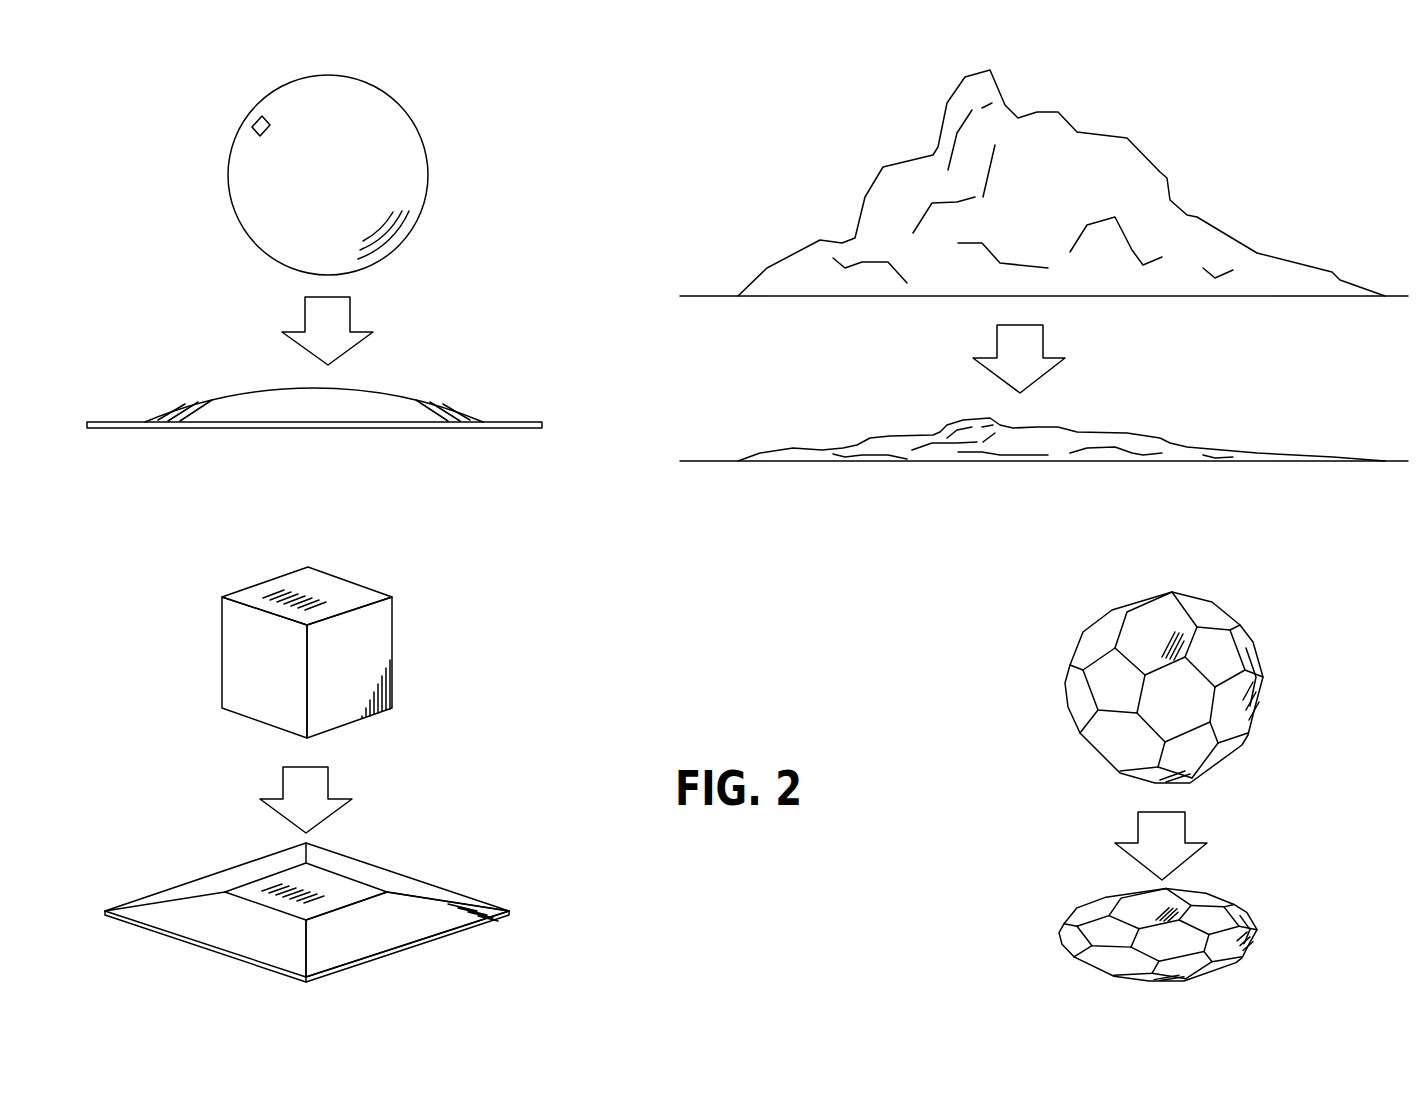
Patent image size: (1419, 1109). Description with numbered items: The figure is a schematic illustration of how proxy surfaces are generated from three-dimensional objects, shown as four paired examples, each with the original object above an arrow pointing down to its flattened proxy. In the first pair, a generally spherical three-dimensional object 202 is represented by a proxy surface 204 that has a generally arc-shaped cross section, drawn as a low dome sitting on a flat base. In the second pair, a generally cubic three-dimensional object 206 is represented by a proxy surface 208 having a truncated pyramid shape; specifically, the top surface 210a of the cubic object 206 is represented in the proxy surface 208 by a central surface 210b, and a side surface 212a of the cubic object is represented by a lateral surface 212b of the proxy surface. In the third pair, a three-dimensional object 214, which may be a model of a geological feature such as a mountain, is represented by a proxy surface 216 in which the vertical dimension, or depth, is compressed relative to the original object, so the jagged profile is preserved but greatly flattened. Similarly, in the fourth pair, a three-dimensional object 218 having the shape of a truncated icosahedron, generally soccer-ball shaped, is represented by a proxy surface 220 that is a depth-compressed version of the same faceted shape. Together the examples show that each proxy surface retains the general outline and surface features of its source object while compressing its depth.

The generally spherical 3D object 202 is at (281, 91).
The proxy surface 204 is at (225, 393).
The generally cubic 3D object 206 is at (398, 618).
The proxy surface 208 is at (356, 867).
The top surface 210a is at (347, 597).
The central surface 210b is at (340, 887).
The side surface 212a is at (358, 653).
The lateral surface 212b is at (398, 923).
The 3D object 214 is at (938, 138).
The proxy surface 216 is at (903, 435).
The 3D object 218 is at (1140, 592).
The proxy surface 220 is at (1090, 907).